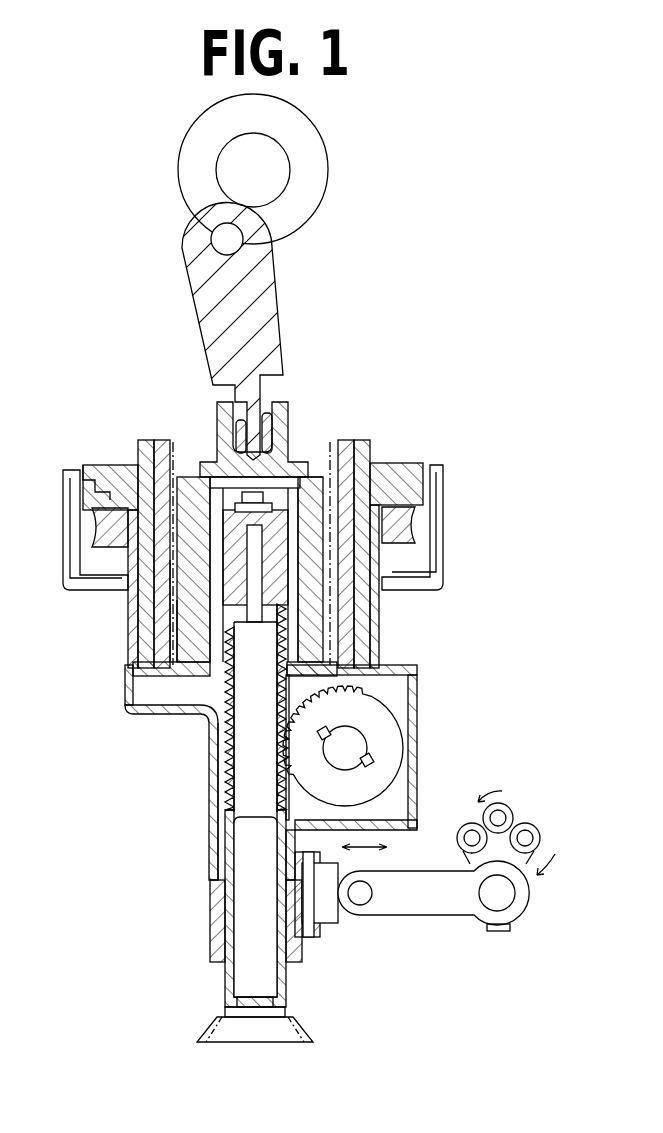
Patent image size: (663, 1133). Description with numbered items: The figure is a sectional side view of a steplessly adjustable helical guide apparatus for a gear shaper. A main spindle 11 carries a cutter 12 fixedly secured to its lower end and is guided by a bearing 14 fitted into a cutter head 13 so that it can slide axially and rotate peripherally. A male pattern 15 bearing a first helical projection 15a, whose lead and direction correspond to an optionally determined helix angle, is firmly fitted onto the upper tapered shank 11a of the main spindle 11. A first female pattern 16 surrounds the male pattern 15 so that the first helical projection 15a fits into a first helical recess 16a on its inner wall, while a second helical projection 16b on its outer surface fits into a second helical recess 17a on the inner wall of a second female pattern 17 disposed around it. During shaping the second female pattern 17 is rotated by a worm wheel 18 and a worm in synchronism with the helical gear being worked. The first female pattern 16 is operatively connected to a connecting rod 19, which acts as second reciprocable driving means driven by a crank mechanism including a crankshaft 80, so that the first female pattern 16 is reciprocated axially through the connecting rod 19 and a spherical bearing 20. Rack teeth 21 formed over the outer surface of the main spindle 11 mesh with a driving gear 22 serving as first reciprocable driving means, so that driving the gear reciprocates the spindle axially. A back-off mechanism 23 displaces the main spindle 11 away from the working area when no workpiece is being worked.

The crankshaft 80 is at (290, 167).
The connecting rod 19 is at (268, 278).
The spherical bearing 20 is at (288, 410).
The second female pattern 17 is at (146, 440).
The second helical recess 17a is at (175, 610).
The worm wheel 18 is at (98, 527).
The male pattern 15 is at (366, 480).
The first helical projection 15a is at (290, 530).
The first female pattern 16 is at (197, 477).
The first helical recess 16a is at (303, 500).
The second helical projection 16b is at (178, 643).
The upper tapered shank 11a is at (183, 670).
The cutter head 13 is at (209, 765).
The driving gear 22 is at (392, 727).
The rack teeth 21 is at (228, 800).
The main spindle 11 is at (228, 842).
The bearing 14 is at (212, 895).
The cutter 12 is at (205, 1030).
The back-off mechanism 23 is at (546, 869).